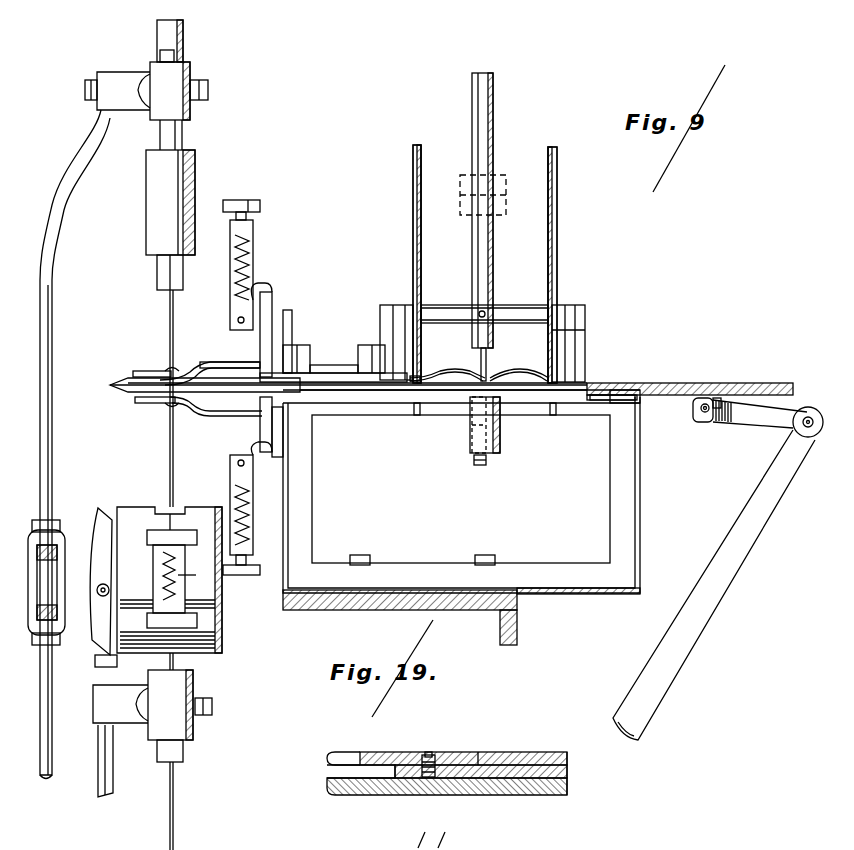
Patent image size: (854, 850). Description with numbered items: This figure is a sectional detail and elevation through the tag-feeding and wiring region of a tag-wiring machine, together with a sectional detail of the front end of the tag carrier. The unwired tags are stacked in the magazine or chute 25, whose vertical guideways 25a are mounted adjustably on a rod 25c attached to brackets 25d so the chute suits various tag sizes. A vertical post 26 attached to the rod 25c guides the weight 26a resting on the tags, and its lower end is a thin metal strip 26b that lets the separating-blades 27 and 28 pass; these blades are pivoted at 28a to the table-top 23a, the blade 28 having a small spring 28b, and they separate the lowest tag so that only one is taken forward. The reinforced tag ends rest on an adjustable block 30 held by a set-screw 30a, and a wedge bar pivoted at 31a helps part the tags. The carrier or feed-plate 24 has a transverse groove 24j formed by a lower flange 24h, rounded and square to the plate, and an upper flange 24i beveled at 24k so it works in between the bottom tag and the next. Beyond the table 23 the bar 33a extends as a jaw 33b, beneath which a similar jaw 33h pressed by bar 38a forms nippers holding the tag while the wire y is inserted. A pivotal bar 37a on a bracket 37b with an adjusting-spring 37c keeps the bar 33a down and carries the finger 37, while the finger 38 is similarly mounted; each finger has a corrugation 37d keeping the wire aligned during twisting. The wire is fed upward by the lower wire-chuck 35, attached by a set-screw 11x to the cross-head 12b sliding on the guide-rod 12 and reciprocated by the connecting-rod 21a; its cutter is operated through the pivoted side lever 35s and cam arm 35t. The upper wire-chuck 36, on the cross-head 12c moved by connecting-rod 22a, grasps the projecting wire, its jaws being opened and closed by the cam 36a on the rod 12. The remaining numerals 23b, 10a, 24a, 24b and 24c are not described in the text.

In FIG. 9, the vertical guide-rod 12 is at (185, 36).
In FIG. 9, the sliding cross-head 12c is at (192, 70).
In FIG. 9, the upper wire-chuck 36 is at (178, 172).
In FIG. 9, the cam 36a is at (160, 267).
In FIG. 9, the wire y is at (168, 315).
In FIG. 9, the connecting-rod 22a is at (53, 250).
In FIG. 9, the finger 37 is at (236, 362).
In FIG. 9, the pivotal bar 37a is at (265, 300).
In FIG. 9, the bracket 37b is at (292, 298).
In FIG. 9, the adjusting-spring 37c is at (252, 258).
In FIG. 9, the corrugation 37d is at (165, 403).
In FIG. 9, the bar 33a is at (322, 372).
In FIG. 9, the jaw 33b is at (220, 373).
In FIG. 9, the jaw 33h is at (207, 400).
In FIG. 9, the finger 38 is at (240, 413).
In FIG. 9, the bar 38a is at (262, 438).
In FIG. 9, the lower wire-chuck 35 is at (205, 597).
In FIG. 9, the pivoted side lever 35s is at (100, 510).
In FIG. 9, the cam arm 35t is at (98, 665).
In FIG. 9, the sliding cross-head 12b is at (192, 690).
In FIG. 9, the set-screw 11x is at (212, 706).
In FIG. 9, the connecting-rod 21a is at (113, 780).
In FIG. 9, the magazine or chute 25 is at (496, 264).
In FIG. 9, the guideway 25a is at (413, 220).
In FIG. 9, the rod 25c is at (521, 305).
In FIG. 9, the bracket 25d is at (390, 305).
In FIG. 9, the vertical rod or post 26 is at (485, 100).
In FIG. 9, the weight 26a is at (500, 170).
In FIG. 9, the thin metal strip 26b is at (486, 357).
In FIG. 9, the separating-blade 28 is at (425, 380).
In FIG. 9, the pivot 28a is at (417, 390).
In FIG. 9, the spring 28b is at (415, 375).
In FIG. 9, the separating-blade 27 is at (520, 378).
In FIG. 9, the adjustable block 30 is at (495, 410).
In FIG. 9, the set-screw 30a is at (488, 462).
In FIG. 9, the table 23 is at (461, 495).
In FIG. 9, the table-top 23a is at (628, 400).
In FIG. 9, the top plate 23b is at (357, 392).
In FIG. 9, the base 10a is at (335, 610).
In FIG. 9, the carrier or feed-plate 24 is at (740, 383).
In FIG. 19, the carrier or feed-plate 24 is at (515, 752).
In FIG. 9, the pivot 31a is at (590, 385).
In FIG. 9, the transverse groove 24j is at (598, 400).
In FIG. 19, the transverse groove 24j is at (360, 771).
In FIG. 9, the pivot bracket 24a is at (706, 422).
In FIG. 9, the arm 24b is at (748, 420).
In FIG. 9, the lever arm 24c is at (722, 588).
In FIG. 19, the bevel 24k is at (340, 752).
In FIG. 19, the upper flange 24i is at (410, 740).
In FIG. 19, the lower flange 24h is at (370, 796).